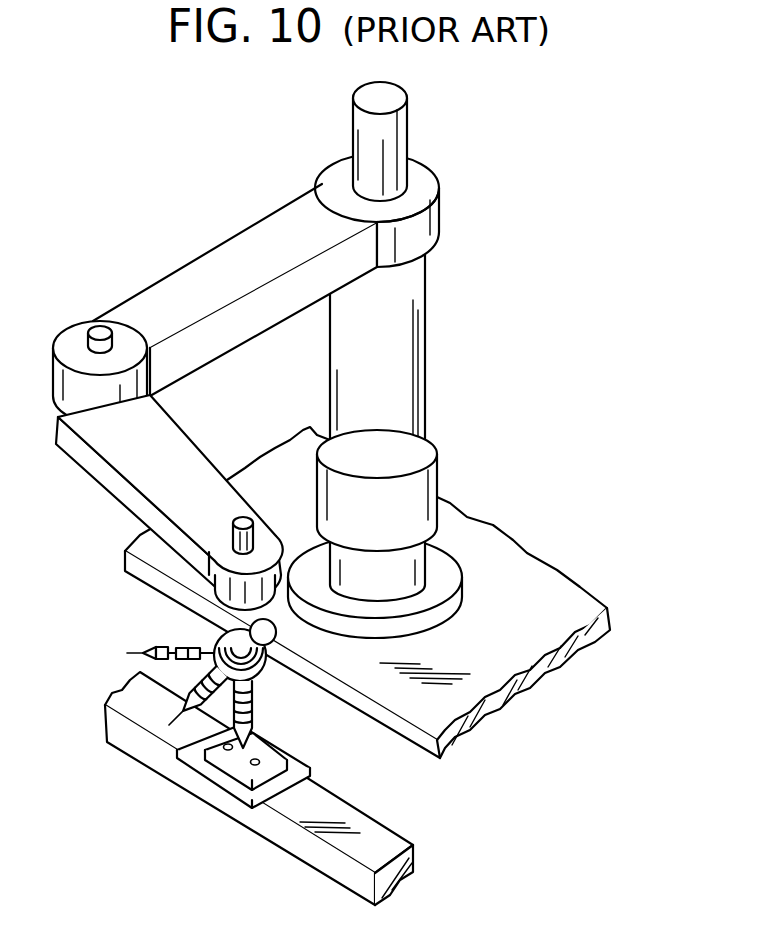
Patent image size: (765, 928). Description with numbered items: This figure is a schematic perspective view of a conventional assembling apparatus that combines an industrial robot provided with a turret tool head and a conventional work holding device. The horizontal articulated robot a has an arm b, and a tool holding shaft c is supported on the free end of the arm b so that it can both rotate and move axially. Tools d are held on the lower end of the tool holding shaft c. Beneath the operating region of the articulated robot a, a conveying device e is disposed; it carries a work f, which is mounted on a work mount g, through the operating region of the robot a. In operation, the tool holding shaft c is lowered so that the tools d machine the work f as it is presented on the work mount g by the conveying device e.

The horizontal articulated robot a is at (114, 234).
The arm b is at (108, 480).
The tool holding shaft c is at (241, 517).
The tools d is at (260, 698).
The conveying device e is at (118, 736).
The work f is at (183, 776).
The work mount g is at (217, 789).